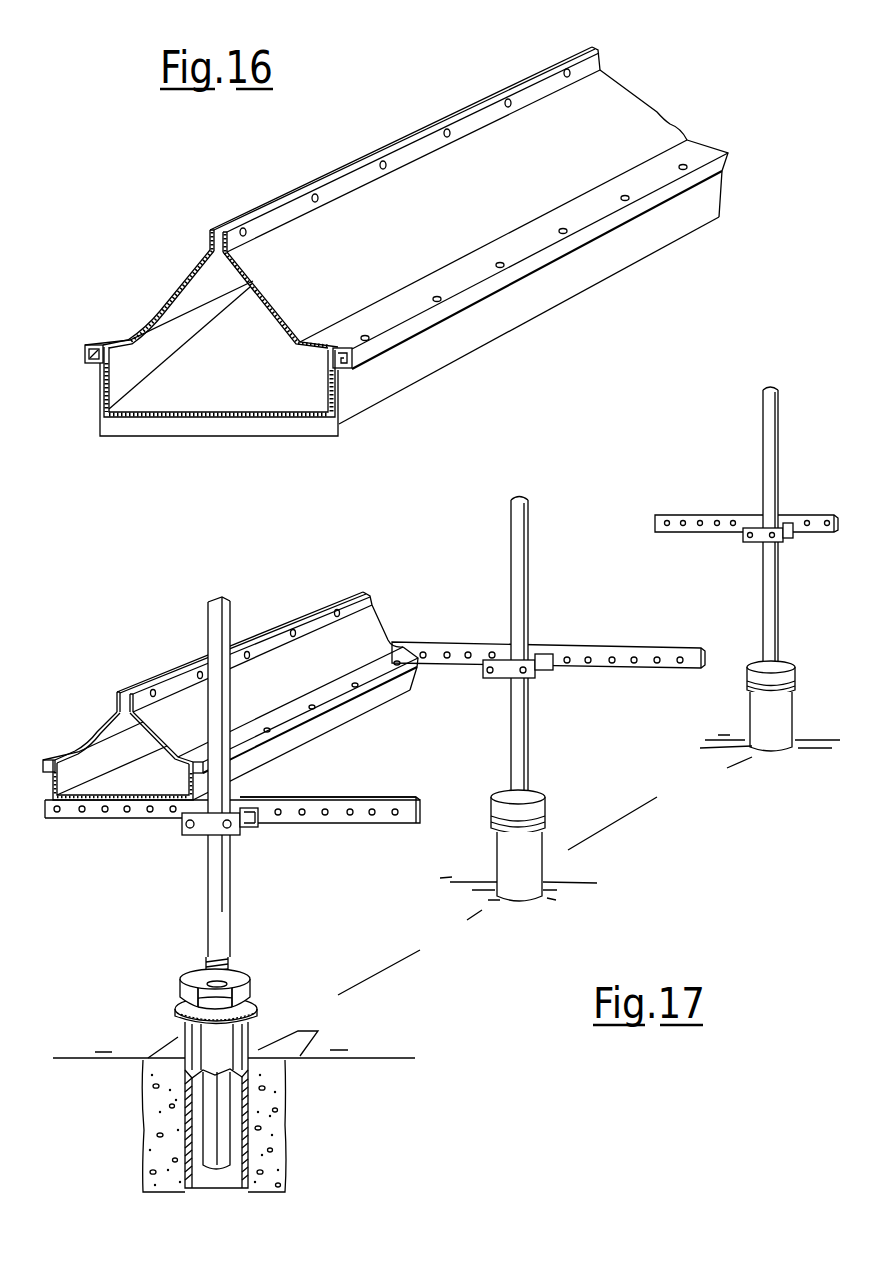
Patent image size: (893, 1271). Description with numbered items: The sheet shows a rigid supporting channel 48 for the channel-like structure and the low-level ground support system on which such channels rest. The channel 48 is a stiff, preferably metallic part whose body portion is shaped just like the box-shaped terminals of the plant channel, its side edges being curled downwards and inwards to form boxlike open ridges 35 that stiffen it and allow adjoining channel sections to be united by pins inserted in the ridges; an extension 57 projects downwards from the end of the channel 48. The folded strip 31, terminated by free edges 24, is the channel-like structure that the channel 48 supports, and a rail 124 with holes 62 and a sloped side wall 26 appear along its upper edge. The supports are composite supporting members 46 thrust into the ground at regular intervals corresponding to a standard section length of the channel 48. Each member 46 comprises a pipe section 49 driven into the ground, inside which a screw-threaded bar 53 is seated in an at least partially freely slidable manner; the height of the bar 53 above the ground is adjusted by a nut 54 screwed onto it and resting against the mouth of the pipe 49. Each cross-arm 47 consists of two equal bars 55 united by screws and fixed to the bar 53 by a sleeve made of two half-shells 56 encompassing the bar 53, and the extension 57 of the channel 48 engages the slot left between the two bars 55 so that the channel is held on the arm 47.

In FIG. 16, the rail 124 is at (420, 148).
In FIG. 16, the strip 31 is at (612, 119).
In FIG. 17, the strip 31 is at (365, 631).
In FIG. 16, the sloped side wall 26 is at (245, 229).
In FIG. 17, the sloped side wall 26 is at (153, 690).
In FIG. 16, the holes 62 is at (122, 333).
In FIG. 17, the holes 62 is at (313, 709).
In FIG. 16, the supporting channel 48 is at (547, 313).
In FIG. 17, the supporting channel 48 is at (352, 730).
In FIG. 16, the boxlike open ridge 35 is at (354, 369).
In FIG. 16, the extension 57 is at (176, 427).
In FIG. 17, the free edge 24 is at (278, 640).
In FIG. 17, the cross-arm 47 is at (346, 791).
In FIG. 17, the bar 55 is at (407, 798).
In FIG. 17, the screw-threaded bar 53 is at (212, 900).
In FIG. 17, the half-shell 56 is at (250, 843).
In FIG. 17, the nut 54 is at (240, 980).
In FIG. 17, the composite supporting member 46 is at (255, 1038).
In FIG. 17, the pipe section 49 is at (242, 1116).